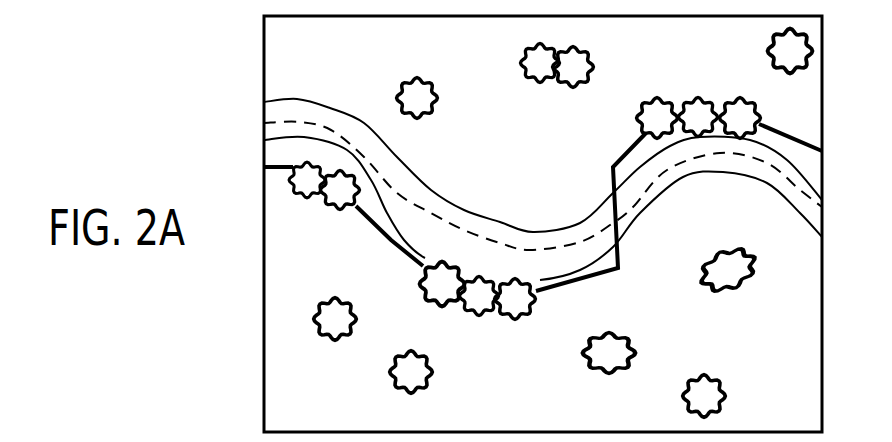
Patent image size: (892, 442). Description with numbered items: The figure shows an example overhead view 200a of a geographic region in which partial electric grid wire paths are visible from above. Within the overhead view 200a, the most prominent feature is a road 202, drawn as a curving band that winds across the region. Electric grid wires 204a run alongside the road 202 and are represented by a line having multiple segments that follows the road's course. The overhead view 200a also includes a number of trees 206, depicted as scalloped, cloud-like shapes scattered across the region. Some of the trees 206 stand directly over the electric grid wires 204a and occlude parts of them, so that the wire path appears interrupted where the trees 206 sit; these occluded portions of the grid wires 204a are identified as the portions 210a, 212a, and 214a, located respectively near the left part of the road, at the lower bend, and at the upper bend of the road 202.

The overhead view 200a is at (222, 131).
The road 202 is at (566, 223).
The electric grid wires 204a is at (613, 268).
The trees 206 is at (737, 292).
The occluded portion of grid wires 210a is at (331, 226).
The occluded portion of grid wires 212a is at (464, 331).
The occluded portion of grid wires 214a is at (671, 73).